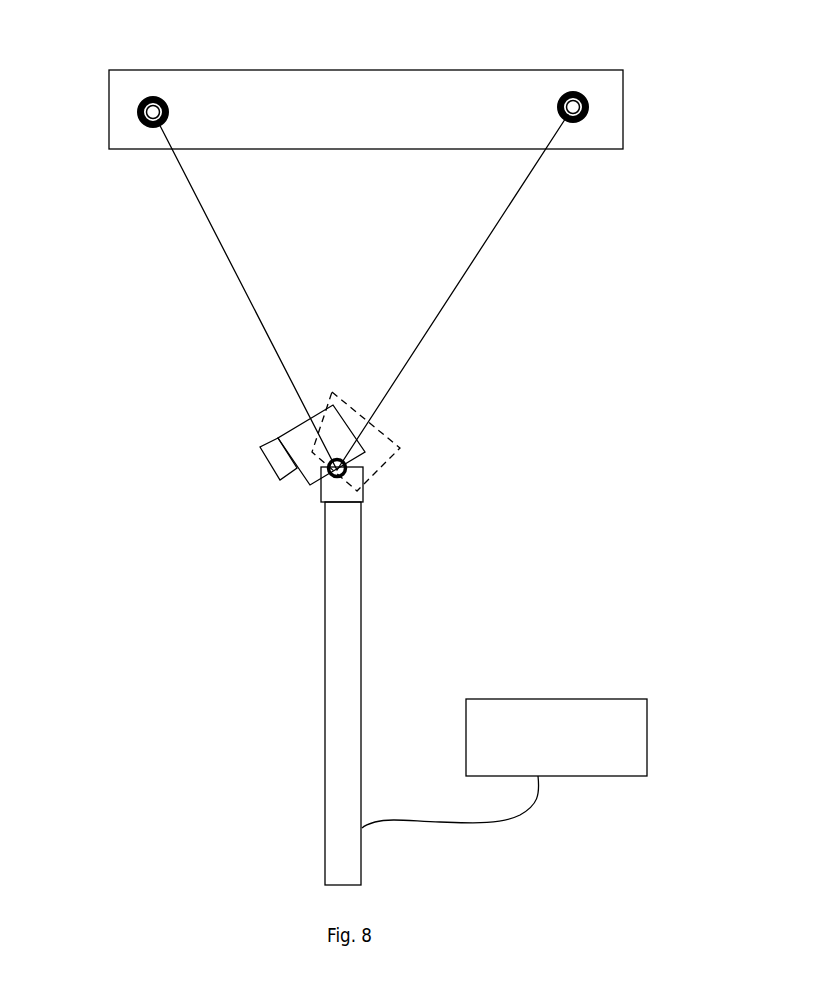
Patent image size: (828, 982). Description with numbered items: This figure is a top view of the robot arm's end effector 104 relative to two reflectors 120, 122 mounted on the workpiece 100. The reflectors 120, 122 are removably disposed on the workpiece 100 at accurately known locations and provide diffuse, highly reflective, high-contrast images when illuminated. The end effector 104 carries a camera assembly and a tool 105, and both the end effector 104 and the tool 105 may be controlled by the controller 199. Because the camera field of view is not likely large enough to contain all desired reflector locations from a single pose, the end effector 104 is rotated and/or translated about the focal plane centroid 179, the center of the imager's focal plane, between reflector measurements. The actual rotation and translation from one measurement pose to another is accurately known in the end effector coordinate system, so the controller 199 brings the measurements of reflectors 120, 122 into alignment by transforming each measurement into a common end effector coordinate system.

The workpiece 100 is at (193, 42).
The reflector 122 is at (135, 115).
The reflector 120 is at (590, 107).
The end effector 104 is at (287, 428).
The tool 105 is at (270, 465).
The focal plane centroid 179 is at (347, 470).
The controller 199 is at (594, 699).